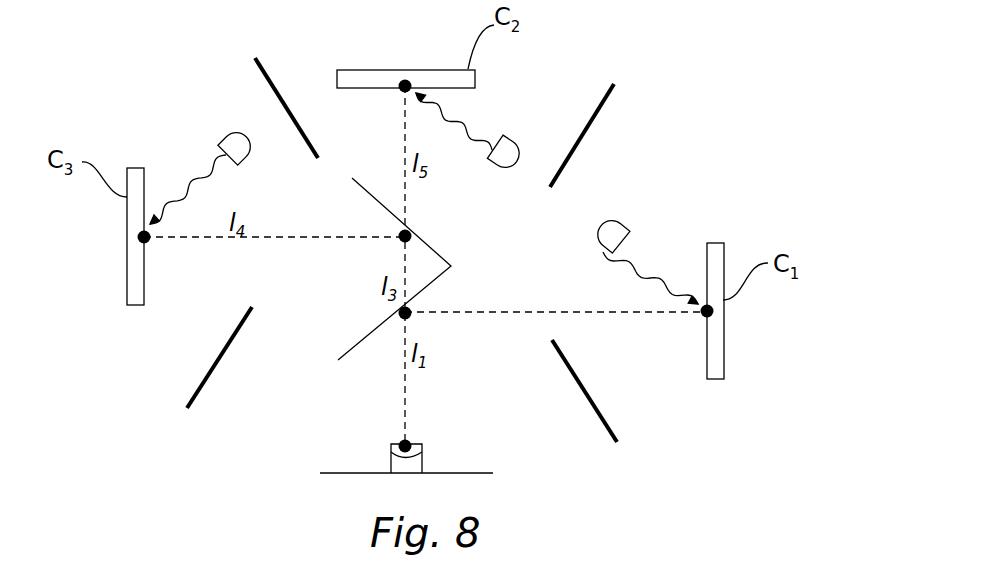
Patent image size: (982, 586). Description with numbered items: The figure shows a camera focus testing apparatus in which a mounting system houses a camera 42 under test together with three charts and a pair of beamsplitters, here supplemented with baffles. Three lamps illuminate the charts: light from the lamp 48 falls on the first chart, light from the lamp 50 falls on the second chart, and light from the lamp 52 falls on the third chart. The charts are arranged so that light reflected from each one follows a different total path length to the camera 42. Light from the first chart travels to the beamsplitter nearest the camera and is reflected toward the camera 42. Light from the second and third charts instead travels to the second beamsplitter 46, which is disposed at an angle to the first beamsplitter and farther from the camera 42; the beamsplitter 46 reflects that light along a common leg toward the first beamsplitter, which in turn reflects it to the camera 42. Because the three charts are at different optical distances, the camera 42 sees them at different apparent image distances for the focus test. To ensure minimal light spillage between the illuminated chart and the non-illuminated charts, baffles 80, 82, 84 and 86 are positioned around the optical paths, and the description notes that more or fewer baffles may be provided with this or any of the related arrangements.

The camera 42 is at (420, 463).
The second beamsplitter 46 is at (373, 202).
The lamp 48 is at (620, 216).
The lamp 50 is at (523, 145).
The lamp 52 is at (222, 133).
The baffle 80 is at (606, 106).
The baffle 82 is at (267, 83).
The baffle 84 is at (210, 368).
The baffle 86 is at (596, 400).